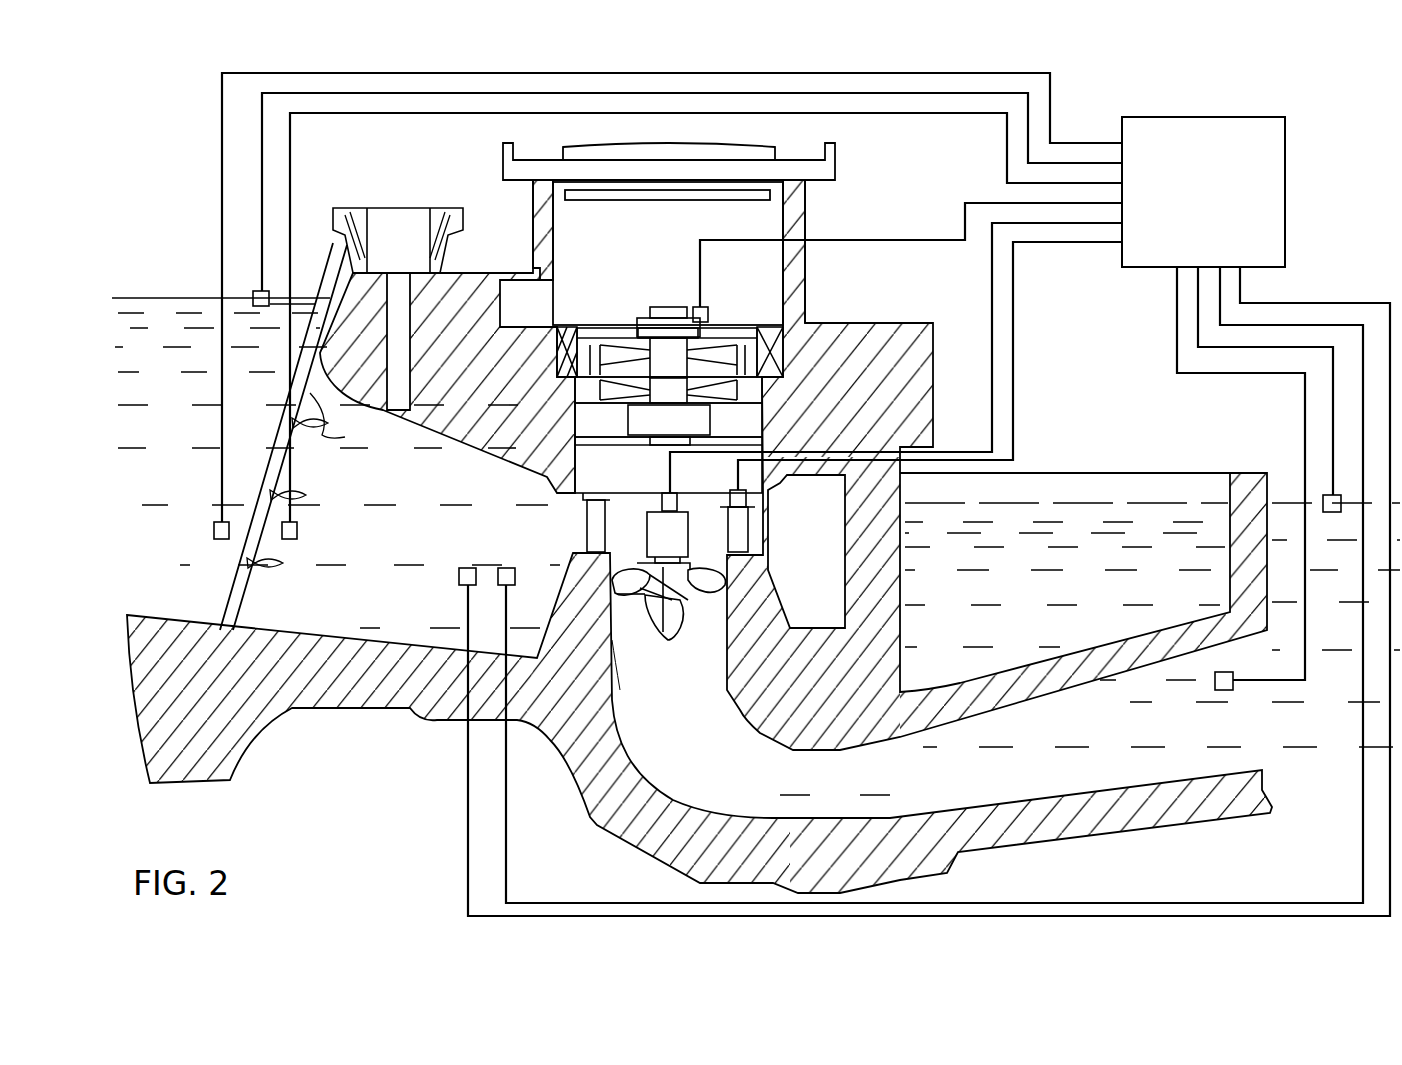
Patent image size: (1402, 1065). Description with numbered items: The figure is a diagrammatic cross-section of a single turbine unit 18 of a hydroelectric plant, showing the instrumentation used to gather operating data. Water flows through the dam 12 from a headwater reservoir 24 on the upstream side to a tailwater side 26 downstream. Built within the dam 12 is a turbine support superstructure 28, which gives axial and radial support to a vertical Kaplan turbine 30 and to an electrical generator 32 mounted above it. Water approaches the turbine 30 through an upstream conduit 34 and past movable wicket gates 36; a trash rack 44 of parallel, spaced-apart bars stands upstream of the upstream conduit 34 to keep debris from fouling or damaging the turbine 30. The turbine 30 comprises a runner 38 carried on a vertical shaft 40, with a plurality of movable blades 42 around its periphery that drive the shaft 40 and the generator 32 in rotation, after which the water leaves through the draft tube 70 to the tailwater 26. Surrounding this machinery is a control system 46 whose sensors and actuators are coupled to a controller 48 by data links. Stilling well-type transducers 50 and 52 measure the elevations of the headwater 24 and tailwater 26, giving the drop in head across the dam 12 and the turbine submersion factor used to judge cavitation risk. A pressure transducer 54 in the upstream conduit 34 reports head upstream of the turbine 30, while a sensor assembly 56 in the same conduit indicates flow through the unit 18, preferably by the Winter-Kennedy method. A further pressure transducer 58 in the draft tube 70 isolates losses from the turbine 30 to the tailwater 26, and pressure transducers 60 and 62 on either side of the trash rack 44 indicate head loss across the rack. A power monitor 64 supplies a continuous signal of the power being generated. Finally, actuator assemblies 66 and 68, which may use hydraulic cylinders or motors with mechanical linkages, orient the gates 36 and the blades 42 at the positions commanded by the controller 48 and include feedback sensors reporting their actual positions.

The dam 12 is at (905, 330).
The turbine unit 18 is at (357, 828).
The headwater reservoir 24 is at (150, 425).
The tailwater side 26 is at (1320, 686).
The turbine support superstructure 28 is at (622, 318).
The Kaplan turbine 30 is at (688, 645).
The electrical generator 32 is at (665, 318).
The upstream conduit 34 is at (429, 483).
The wicket gates 36 is at (587, 522).
The runner 38 is at (668, 630).
The vertical shaft 40 is at (685, 522).
The movable blades 42 is at (626, 664).
The trash rack 44 is at (325, 425).
The control system 46 is at (1305, 274).
The controller 48 is at (1190, 222).
The stilling well-type transducer 50 is at (262, 290).
The stilling well-type transducer 52 is at (1323, 500).
The pressure transducer 54 is at (468, 568).
The flow sensor assembly 56 is at (506, 568).
The pressure transducer 58 is at (1215, 681).
The pressure transducer 60 is at (213, 530).
The pressure transducer 62 is at (297, 532).
The power monitor 64 is at (710, 314).
The actuator assembly 66 is at (747, 498).
The actuator assembly 68 is at (668, 495).
The draft tube 70 is at (994, 785).